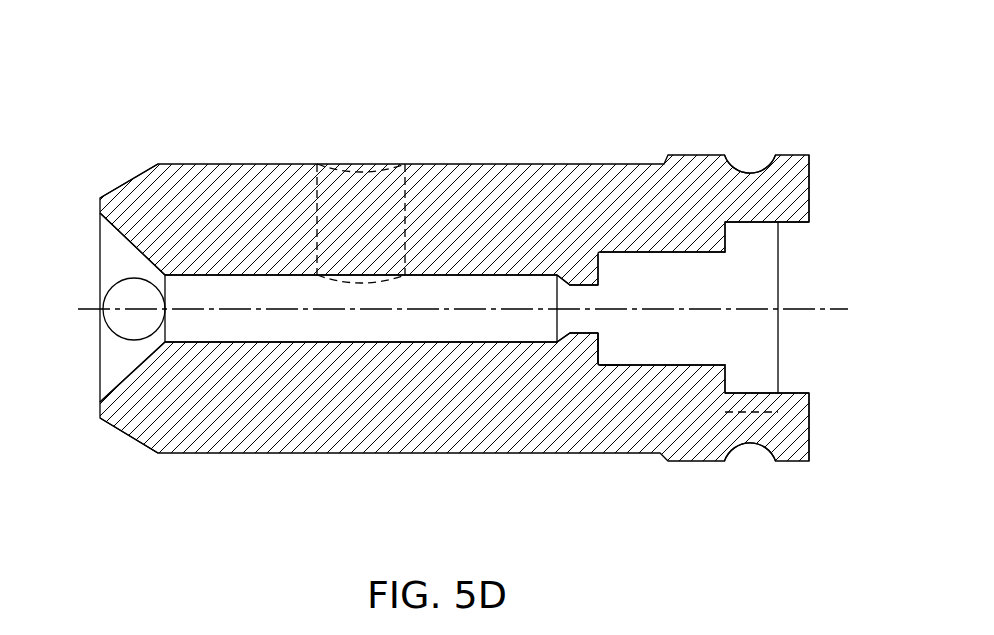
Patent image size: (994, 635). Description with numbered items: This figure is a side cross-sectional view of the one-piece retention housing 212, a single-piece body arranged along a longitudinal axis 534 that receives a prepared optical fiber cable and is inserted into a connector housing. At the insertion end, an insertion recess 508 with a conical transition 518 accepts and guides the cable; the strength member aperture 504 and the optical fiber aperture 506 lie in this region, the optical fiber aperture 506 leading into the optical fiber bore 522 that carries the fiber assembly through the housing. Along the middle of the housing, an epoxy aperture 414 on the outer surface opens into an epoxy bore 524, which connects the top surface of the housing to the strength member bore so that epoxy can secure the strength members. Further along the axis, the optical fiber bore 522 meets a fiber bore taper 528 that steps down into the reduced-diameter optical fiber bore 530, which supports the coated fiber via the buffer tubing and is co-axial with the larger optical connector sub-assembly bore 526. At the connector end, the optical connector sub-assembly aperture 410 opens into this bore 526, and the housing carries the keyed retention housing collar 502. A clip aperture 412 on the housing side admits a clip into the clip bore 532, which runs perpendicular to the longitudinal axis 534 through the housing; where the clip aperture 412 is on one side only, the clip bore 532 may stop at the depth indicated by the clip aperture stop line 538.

The one-piece retention housing 212 is at (562, 97).
The optical connector sub-assembly aperture 410 is at (805, 252).
The clip aperture 412 is at (752, 162).
The epoxy aperture 414 is at (360, 172).
The keyed retention housing collar 502 is at (672, 458).
The strength member aperture 504 is at (118, 333).
The optical fiber aperture 506 is at (165, 330).
The insertion recess 508 is at (118, 257).
The conical transition 518 is at (140, 175).
The optical fiber bore 522 is at (262, 320).
The epoxy bore 524 is at (387, 210).
The optical connector sub-assembly bore 526 is at (627, 273).
The fiber bore taper 528 is at (567, 285).
The reduced-diameter optical fiber bore 530 is at (580, 322).
The clip bore 532 is at (762, 363).
The longitudinal axis 534 is at (827, 312).
The clip aperture stop line 538 is at (758, 413).